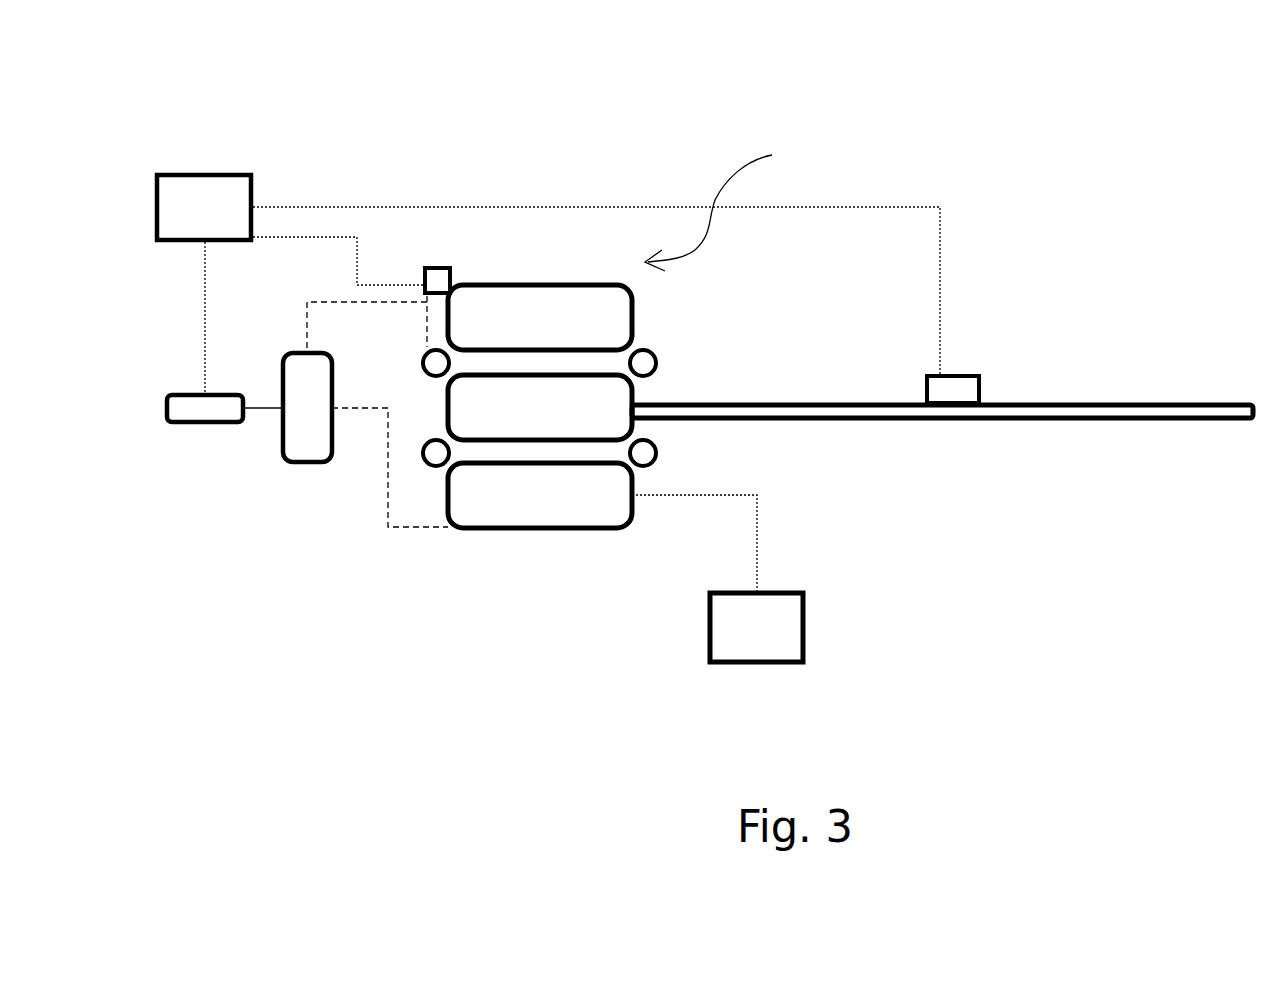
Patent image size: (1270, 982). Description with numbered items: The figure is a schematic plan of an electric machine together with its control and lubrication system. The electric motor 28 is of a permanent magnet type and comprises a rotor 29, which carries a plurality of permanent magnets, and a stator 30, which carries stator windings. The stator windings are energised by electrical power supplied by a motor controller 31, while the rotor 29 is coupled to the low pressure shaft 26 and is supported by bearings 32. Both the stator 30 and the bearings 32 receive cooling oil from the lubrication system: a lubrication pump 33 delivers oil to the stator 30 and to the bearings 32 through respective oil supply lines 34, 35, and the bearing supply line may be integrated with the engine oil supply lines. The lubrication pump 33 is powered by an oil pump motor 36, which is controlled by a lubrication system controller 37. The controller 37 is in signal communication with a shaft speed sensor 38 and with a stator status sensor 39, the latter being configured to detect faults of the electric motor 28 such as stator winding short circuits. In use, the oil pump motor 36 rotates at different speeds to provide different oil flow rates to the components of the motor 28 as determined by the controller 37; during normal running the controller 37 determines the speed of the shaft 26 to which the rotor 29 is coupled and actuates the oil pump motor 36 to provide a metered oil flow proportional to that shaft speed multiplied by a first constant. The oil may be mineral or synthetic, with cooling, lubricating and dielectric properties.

The low pressure shaft 26 is at (893, 403).
The electric motor 28 is at (739, 205).
The rotor 29 is at (632, 393).
The stator 30 is at (567, 285).
The motor controller 31 is at (803, 627).
The bearings 32 is at (653, 347).
The lubrication pump 33 is at (307, 462).
The oil supply line 34 is at (388, 527).
The oil supply line 35 is at (367, 297).
The oil pump motor 36 is at (205, 422).
The lubrication system controller 37 is at (253, 174).
The shaft speed sensor 38 is at (980, 393).
The stator status sensor 39 is at (440, 267).